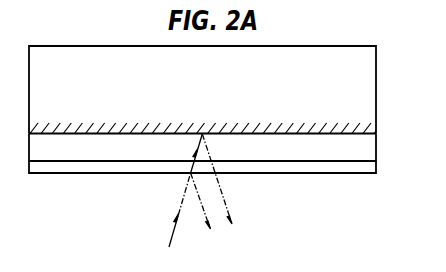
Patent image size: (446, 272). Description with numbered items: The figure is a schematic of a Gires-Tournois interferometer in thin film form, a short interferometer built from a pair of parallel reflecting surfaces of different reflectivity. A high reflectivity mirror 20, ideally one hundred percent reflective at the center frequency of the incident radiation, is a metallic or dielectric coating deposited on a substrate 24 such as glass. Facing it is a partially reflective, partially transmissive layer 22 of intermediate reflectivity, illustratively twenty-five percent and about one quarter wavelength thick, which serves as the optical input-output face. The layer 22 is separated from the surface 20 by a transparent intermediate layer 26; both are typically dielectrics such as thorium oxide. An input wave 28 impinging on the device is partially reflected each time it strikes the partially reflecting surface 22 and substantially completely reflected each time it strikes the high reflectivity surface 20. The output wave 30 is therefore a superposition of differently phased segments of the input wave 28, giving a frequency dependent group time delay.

The substrate 24 is at (367, 94).
The high reflectivity mirror 20 is at (377, 134).
The transparent intermediate layer 26 is at (370, 148).
The partially reflective layer 22 is at (372, 168).
The input wave 28 is at (183, 196).
The output wave 30 is at (236, 216).